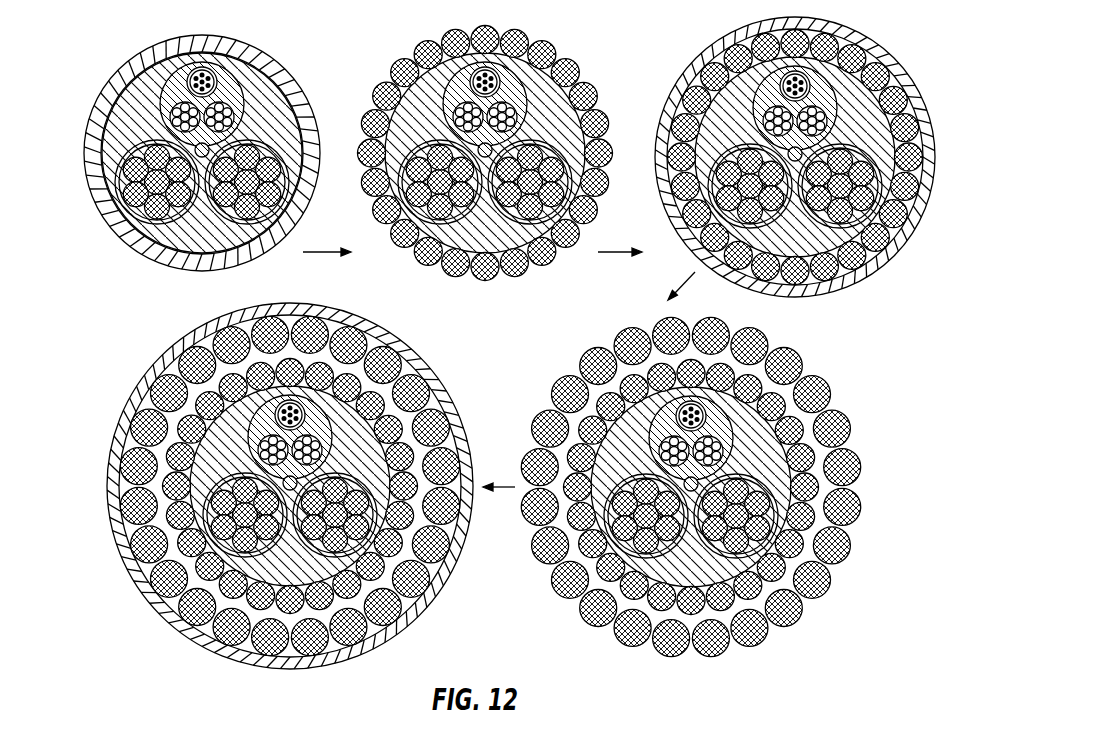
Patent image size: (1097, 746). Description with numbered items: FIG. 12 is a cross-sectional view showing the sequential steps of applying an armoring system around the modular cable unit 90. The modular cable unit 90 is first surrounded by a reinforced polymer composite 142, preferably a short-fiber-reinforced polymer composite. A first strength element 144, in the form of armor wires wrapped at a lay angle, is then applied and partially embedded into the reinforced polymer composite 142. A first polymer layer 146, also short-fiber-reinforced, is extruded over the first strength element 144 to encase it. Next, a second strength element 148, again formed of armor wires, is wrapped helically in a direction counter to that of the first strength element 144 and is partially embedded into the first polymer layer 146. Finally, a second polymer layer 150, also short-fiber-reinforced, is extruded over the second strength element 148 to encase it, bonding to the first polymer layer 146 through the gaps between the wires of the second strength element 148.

The modular cable unit 90 is at (280, 83).
The reinforced polymer composite 142 is at (202, 159).
The first strength element 144 is at (530, 37).
The first polymer layer 146 is at (717, 48).
The second strength element 148 is at (817, 365).
The second polymer layer 150 is at (413, 353).